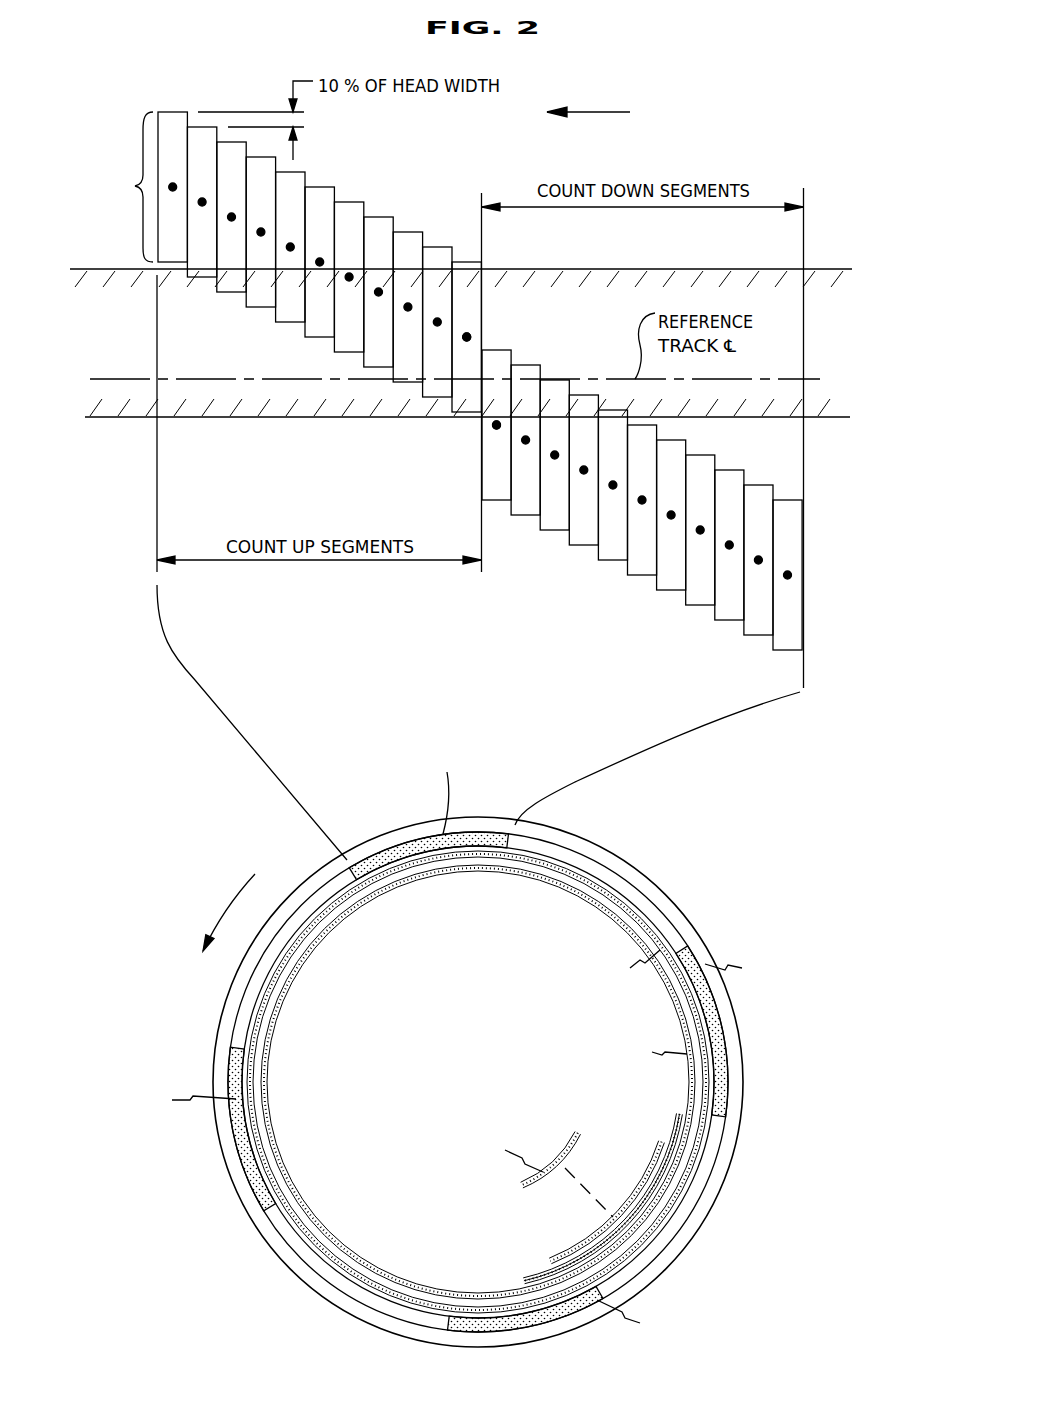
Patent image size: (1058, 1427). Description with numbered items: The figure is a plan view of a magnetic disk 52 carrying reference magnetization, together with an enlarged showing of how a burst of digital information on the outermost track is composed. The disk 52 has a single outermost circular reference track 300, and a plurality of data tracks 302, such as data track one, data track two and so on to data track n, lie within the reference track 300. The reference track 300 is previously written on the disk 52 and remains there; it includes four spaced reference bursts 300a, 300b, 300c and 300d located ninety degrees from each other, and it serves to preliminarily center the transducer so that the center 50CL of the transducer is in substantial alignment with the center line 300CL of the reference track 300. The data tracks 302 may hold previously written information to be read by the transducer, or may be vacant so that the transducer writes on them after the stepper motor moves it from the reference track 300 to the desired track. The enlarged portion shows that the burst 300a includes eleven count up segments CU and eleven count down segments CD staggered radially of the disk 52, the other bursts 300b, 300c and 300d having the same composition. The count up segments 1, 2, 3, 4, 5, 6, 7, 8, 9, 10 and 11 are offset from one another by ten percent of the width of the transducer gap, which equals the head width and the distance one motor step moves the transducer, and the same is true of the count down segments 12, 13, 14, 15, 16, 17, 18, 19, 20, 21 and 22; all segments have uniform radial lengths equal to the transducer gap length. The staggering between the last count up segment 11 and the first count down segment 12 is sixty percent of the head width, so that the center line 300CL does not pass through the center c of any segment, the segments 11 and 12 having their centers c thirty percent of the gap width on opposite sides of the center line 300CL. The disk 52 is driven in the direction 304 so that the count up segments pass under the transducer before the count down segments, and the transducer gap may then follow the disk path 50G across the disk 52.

The direction of disk rotation 304 is at (606, 112).
The center of the transducer 50CL is at (137, 178).
The disk path of the transducer gap 50G is at (838, 268).
The center line of the reference track 300CL is at (116, 358).
The reference track 300 is at (625, 877).
The disk 52 is at (683, 908).
The data tracks 302 is at (317, 942).
The reference burst 300a is at (484, 836).
The reference burst 300b is at (722, 1081).
The reference burst 300c is at (457, 1332).
The reference burst 300d is at (250, 1168).
The count up segments CU is at (319, 276).
The count down segments CD is at (642, 516).
The center of a segment c is at (468, 335).
The count up segment 1 is at (172, 205).
The count up segment 2 is at (201, 215).
The count up segment 3 is at (231, 230).
The count up segment 4 is at (260, 245).
The count up segment 5 is at (290, 260).
The count up segment 6 is at (319, 275).
The count up segment 7 is at (348, 290).
The count up segment 8 is at (378, 292).
The count up segment 9 is at (407, 320).
The count up segment 10 is at (437, 334).
The last count up segment 11 is at (466, 351).
The first count down segment 12 is at (496, 438).
The count down segment 13 is at (525, 453).
The count down segment 14 is at (554, 468).
The count down segment 15 is at (583, 483).
The count down segment 16 is at (612, 498).
The count down segment 17 is at (642, 513).
The count down segment 18 is at (671, 528).
The count down segment 19 is at (700, 543).
The count down segment 20 is at (729, 558).
The count down segment 21 is at (758, 574).
The last count down segment 22 is at (787, 591).